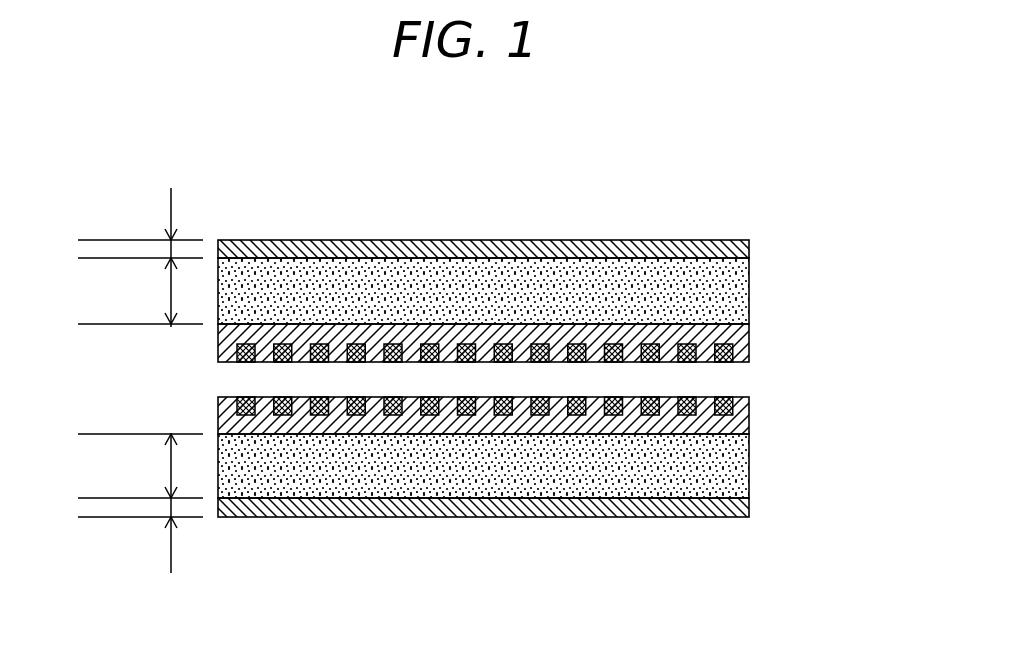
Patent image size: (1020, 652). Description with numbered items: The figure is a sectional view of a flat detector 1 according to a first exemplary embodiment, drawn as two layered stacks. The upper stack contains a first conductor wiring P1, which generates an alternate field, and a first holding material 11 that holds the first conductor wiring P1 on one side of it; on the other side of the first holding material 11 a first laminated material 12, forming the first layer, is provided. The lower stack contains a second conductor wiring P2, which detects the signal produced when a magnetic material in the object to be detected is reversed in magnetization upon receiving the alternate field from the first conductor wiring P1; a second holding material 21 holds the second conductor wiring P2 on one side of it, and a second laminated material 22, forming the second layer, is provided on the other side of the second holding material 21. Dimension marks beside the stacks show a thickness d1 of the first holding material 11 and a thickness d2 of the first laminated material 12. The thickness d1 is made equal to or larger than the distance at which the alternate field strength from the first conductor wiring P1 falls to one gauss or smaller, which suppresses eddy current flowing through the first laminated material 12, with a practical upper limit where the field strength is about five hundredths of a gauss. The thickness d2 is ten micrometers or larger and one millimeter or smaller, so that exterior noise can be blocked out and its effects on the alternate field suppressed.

The flat detector 1 is at (320, 218).
The first laminated material 12 is at (662, 247).
The first holding material 11 is at (722, 290).
The first conductor wiring P1 is at (733, 349).
The second conductor wiring P2 is at (737, 400).
The second holding material 21 is at (722, 474).
The second laminated material 22 is at (647, 513).
The thickness of the first holding material d1 is at (140, 378).
The thickness of the first laminated material d2 is at (140, 380).